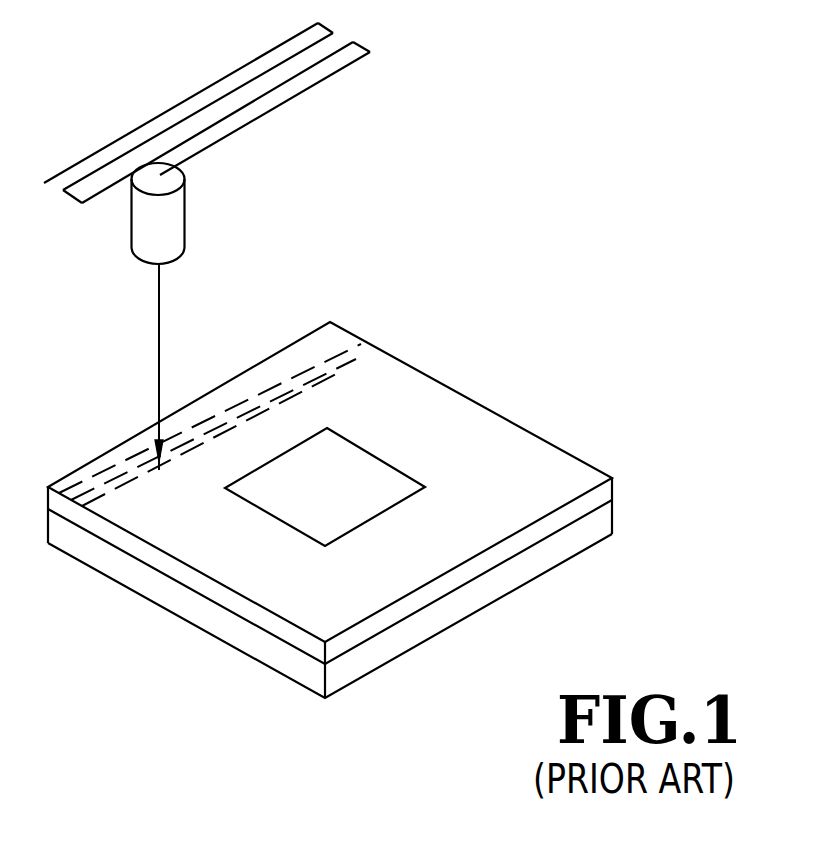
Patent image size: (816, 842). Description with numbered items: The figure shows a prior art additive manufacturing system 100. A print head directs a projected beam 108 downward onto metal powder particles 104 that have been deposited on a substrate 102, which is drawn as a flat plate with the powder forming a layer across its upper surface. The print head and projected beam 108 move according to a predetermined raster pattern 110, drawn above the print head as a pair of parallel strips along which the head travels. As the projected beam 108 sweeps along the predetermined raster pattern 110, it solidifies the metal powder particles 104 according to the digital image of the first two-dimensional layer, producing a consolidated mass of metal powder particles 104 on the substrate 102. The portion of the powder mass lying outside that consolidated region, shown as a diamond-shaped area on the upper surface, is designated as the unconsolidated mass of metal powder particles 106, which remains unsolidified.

The prior art additive manufacturing system 100 is at (588, 167).
The substrate 102 is at (212, 618).
The metal powder particles 104 is at (512, 447).
The unconsolidated mass of metal powder particles 106 is at (357, 502).
The projected beam 108 is at (157, 358).
The predetermined raster pattern 110 is at (218, 83).